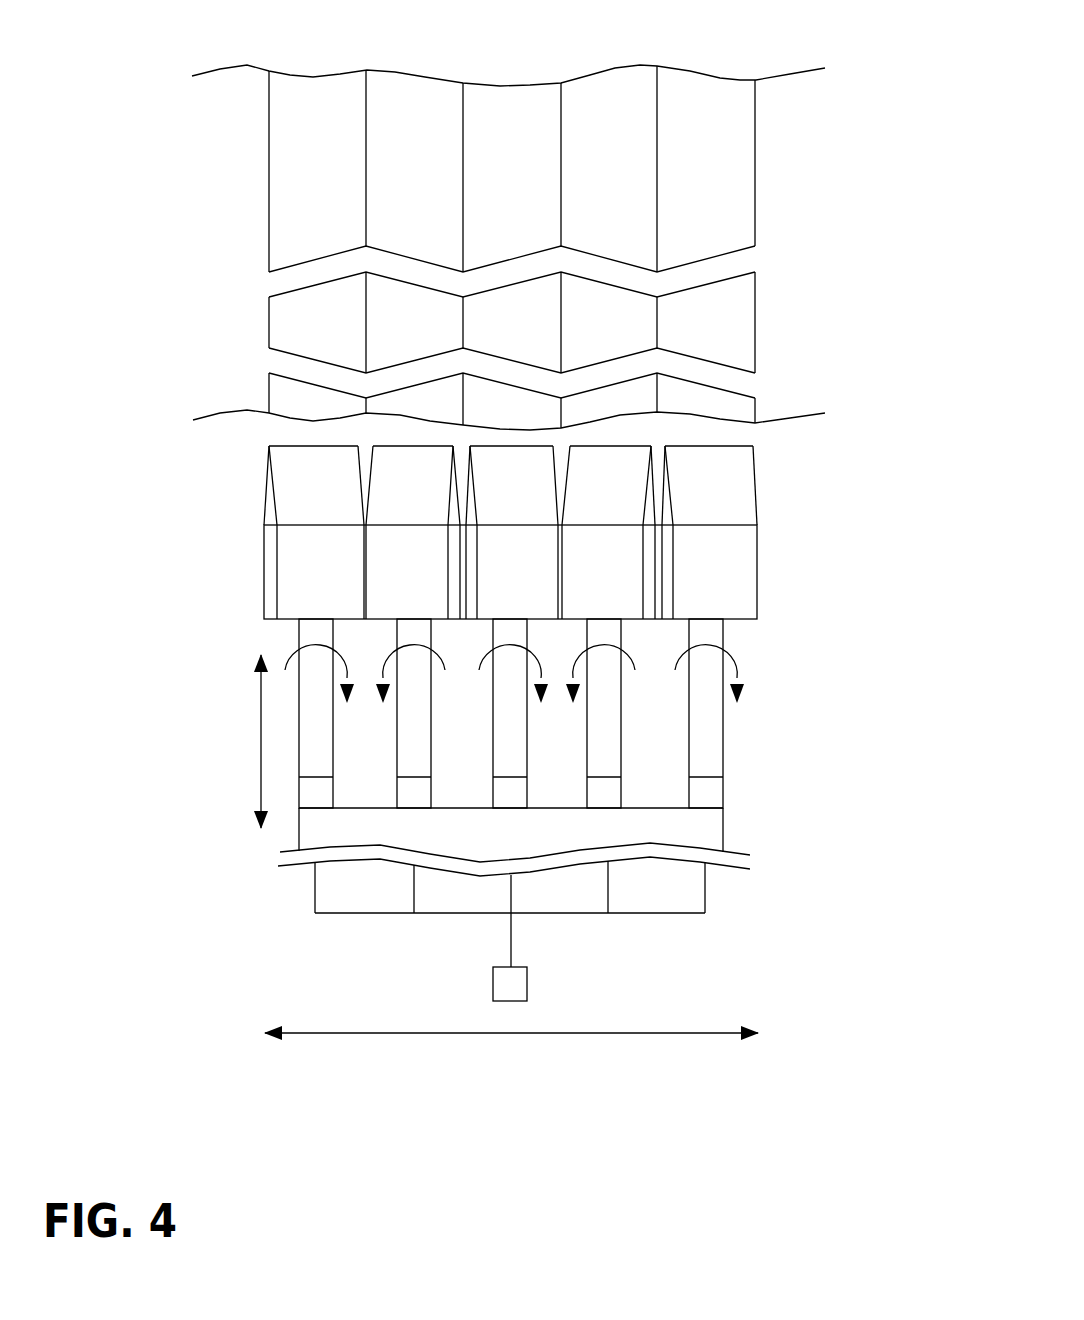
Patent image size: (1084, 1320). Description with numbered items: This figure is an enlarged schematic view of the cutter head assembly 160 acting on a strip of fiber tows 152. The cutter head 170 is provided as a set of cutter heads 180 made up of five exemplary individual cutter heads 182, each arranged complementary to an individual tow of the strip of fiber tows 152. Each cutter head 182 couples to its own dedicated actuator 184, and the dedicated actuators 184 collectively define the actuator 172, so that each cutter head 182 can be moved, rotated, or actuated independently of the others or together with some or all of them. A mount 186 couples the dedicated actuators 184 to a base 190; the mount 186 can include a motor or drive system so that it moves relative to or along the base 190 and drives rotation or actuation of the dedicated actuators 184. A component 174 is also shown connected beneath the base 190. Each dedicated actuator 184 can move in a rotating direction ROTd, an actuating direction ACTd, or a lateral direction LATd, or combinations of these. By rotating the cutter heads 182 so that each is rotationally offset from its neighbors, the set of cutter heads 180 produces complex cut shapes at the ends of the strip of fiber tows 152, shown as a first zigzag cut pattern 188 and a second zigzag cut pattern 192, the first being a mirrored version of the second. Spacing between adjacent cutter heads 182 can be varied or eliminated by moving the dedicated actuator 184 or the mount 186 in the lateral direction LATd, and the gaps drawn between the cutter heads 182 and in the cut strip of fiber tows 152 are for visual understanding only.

The strip of fiber tows 152 is at (528, 247).
The first zigzag cut pattern 188 is at (745, 260).
The second zigzag cut pattern 192 is at (747, 382).
The cutter head assembly 160 is at (517, 527).
The cutter head 170 is at (260, 477).
The set of cutter heads 180 is at (489, 566).
The cutter head 182 is at (723, 584).
The dedicated actuator 184 is at (710, 743).
The actuator 172 is at (598, 740).
The mount 186 is at (708, 795).
The base 190 is at (322, 836).
The controller 174 is at (520, 982).
The rotating direction ROTd is at (737, 662).
The actuating direction ACTd is at (258, 732).
The lateral direction LATd is at (480, 1033).